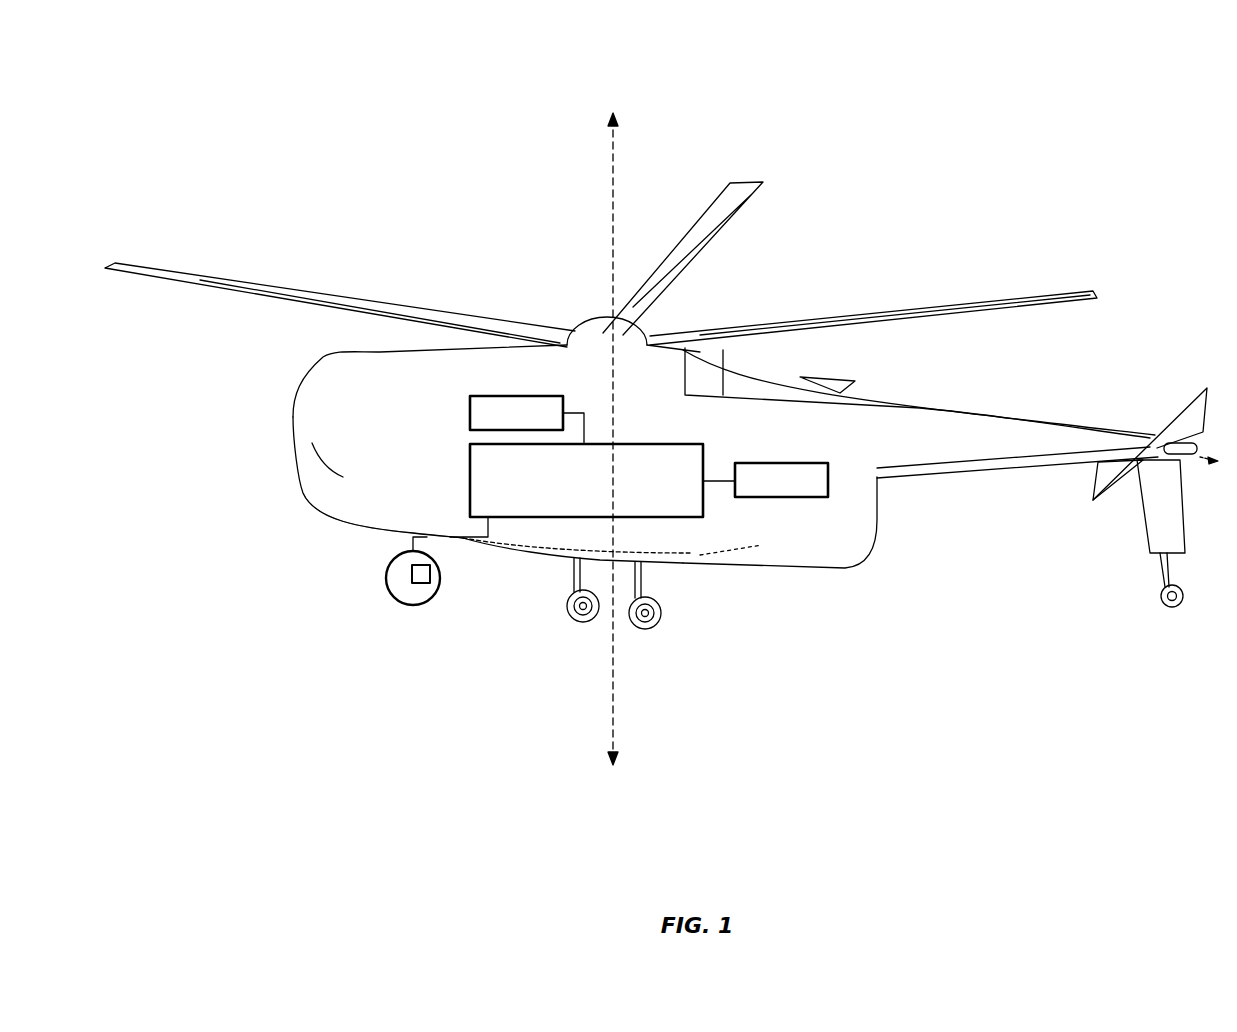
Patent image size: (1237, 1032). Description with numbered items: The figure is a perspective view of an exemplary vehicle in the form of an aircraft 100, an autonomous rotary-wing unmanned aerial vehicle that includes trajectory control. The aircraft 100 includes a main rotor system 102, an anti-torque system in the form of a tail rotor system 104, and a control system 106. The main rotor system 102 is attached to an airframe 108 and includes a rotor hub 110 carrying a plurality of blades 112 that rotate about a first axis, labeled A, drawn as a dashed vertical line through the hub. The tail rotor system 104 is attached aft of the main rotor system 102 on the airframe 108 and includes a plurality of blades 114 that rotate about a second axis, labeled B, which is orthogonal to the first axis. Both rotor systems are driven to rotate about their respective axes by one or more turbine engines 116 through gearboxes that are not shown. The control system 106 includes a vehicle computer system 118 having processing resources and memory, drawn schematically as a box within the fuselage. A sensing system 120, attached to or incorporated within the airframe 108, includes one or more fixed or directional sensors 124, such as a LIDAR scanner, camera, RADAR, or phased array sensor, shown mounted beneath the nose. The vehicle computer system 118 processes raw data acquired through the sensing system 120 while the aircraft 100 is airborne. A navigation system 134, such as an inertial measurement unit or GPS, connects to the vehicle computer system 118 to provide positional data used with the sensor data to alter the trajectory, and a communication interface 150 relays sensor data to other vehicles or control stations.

The aircraft 100 is at (340, 46).
The main rotor system 102 is at (532, 258).
The tail rotor system 104 is at (1156, 358).
The control system 106 is at (464, 463).
The airframe 108 is at (905, 465).
The rotor hub 110 is at (583, 324).
The blades 112 is at (917, 306).
The blades 114 is at (1097, 502).
The turbine engines 116 is at (702, 384).
The vehicle computer system 118 is at (592, 490).
The sensing system 120 is at (450, 524).
The sensor 124 is at (387, 578).
The navigation system 134 is at (527, 420).
The communication interface 150 is at (781, 480).